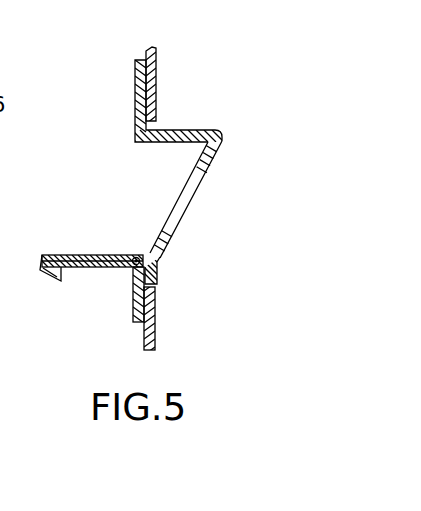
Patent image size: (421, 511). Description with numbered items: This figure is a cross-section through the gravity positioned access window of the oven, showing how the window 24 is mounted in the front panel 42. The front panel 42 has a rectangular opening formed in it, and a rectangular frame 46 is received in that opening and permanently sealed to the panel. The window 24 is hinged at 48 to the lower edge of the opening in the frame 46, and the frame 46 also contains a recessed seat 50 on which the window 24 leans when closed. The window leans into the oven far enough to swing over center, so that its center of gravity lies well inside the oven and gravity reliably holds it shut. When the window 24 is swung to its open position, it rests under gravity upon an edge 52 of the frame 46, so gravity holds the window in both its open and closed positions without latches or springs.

The gravity positioned access window 24 is at (85, 255).
The front panel 42 is at (156, 72).
The rectangular frame 46 is at (135, 103).
The hinge 48 is at (157, 260).
The recessed seat 50 is at (217, 154).
The edge of the frame 52 is at (133, 270).